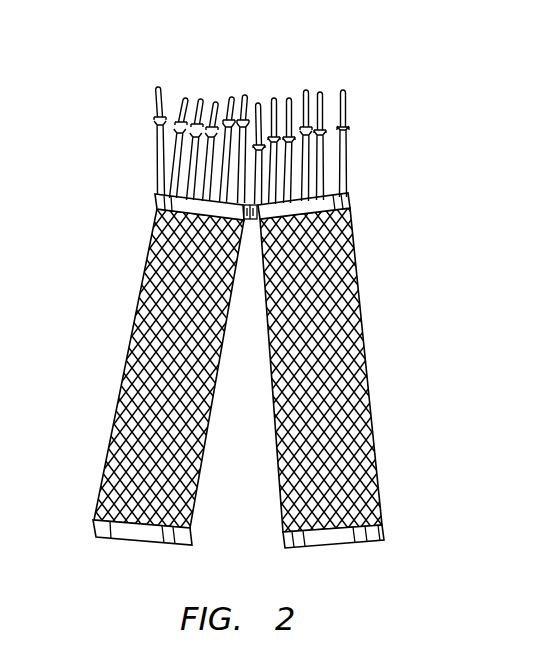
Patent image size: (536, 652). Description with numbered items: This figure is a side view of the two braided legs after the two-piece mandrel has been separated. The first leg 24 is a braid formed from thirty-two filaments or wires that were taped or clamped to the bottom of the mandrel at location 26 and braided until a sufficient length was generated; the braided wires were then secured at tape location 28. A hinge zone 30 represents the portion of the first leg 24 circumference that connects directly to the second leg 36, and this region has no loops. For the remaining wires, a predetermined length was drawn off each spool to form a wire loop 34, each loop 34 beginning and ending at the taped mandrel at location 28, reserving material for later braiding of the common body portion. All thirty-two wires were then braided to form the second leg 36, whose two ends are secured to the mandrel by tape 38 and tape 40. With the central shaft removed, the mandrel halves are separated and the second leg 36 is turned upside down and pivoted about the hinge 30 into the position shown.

The first leg 24 is at (138, 297).
The attachment location of the filaments 26 is at (95, 525).
The tape location at end of first leg 28 is at (155, 200).
The hinge zone 30 is at (250, 222).
The wire loops 34 is at (187, 98).
The second leg 36 is at (360, 308).
The tape 38 is at (382, 528).
The tape 40 is at (348, 200).